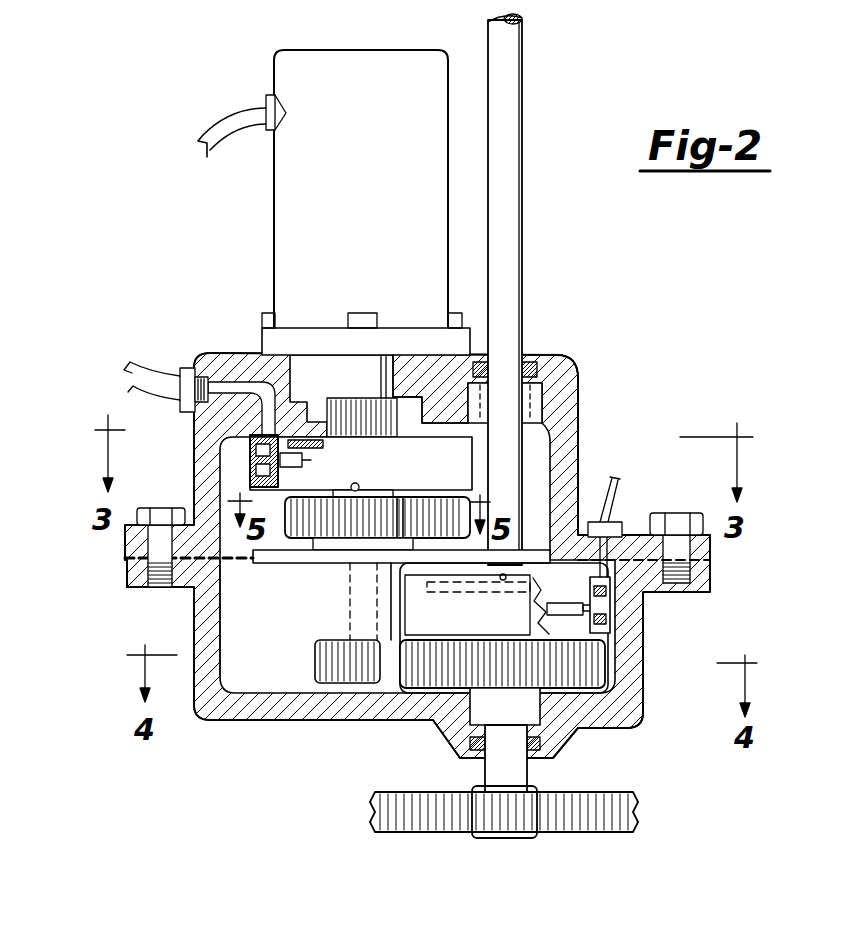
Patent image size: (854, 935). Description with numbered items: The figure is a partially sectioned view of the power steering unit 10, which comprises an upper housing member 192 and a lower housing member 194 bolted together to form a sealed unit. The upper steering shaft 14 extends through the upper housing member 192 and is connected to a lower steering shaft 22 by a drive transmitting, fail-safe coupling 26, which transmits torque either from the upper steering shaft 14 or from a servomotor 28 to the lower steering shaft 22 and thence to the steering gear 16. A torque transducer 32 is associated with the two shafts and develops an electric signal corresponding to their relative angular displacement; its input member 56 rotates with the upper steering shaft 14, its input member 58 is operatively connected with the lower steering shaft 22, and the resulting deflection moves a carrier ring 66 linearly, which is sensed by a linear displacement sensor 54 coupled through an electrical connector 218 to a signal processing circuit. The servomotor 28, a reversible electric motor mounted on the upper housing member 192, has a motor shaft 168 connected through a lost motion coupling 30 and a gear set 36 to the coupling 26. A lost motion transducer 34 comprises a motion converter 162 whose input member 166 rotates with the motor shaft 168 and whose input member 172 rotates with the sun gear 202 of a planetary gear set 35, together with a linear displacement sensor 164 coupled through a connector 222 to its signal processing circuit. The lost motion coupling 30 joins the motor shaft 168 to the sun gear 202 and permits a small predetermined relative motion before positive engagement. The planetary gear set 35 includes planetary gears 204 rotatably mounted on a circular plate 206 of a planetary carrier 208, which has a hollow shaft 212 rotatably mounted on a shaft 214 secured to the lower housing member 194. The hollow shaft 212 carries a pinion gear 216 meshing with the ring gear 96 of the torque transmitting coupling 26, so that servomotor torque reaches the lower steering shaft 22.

The power steering unit 10 is at (597, 347).
The upper steering shaft 14 is at (514, 113).
The steering gear 16 is at (546, 786).
The lower steering shaft 22 is at (483, 772).
The drive transmitting fail-safe coupling 26 is at (618, 672).
The servomotor 28 is at (372, 120).
The lost motion coupling 30 is at (317, 497).
The torque transducer 32 is at (620, 607).
The lost motion transducer 34 is at (250, 446).
The planetary gear set 35 is at (283, 508).
The gear set 36 is at (246, 596).
The linear displacement sensor 54 is at (612, 590).
The input member 56 is at (615, 588).
The input member 58 is at (612, 690).
The carrier ring 66 is at (612, 619).
The ring gear 96 is at (448, 662).
The motion converter 162 is at (440, 422).
The linear displacement sensor 164 is at (268, 432).
The input member 166 is at (322, 482).
The motor shaft 168 is at (407, 427).
The input member 172 is at (380, 490).
The upper housing member 192 is at (576, 400).
The lower housing member 194 is at (634, 715).
The sun gear 202 is at (345, 542).
The planetary gears 204 is at (474, 470).
The circular plate 206 is at (253, 564).
The planetary carrier 208 is at (560, 470).
The hollow shaft 212 is at (403, 620).
The shaft 214 is at (393, 607).
The pinion gear 216 is at (352, 644).
The electrical connector 218 is at (621, 514).
The connector 222 is at (183, 377).